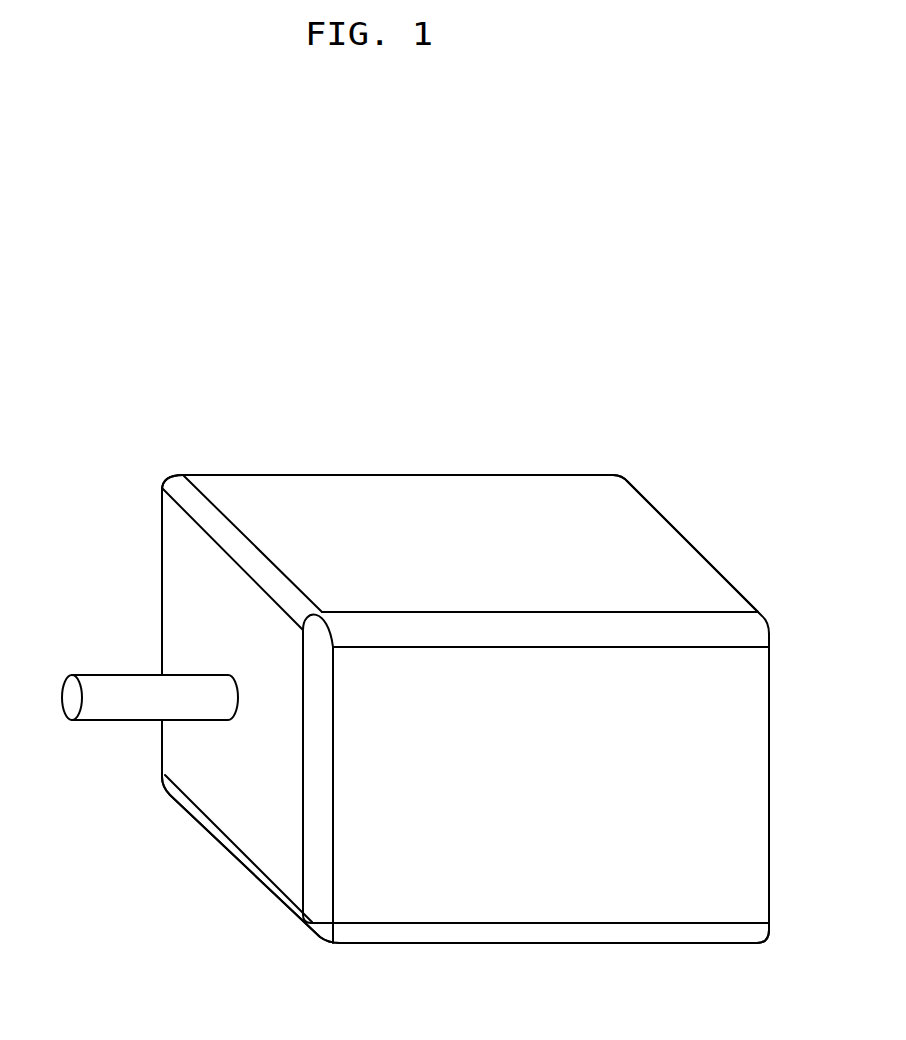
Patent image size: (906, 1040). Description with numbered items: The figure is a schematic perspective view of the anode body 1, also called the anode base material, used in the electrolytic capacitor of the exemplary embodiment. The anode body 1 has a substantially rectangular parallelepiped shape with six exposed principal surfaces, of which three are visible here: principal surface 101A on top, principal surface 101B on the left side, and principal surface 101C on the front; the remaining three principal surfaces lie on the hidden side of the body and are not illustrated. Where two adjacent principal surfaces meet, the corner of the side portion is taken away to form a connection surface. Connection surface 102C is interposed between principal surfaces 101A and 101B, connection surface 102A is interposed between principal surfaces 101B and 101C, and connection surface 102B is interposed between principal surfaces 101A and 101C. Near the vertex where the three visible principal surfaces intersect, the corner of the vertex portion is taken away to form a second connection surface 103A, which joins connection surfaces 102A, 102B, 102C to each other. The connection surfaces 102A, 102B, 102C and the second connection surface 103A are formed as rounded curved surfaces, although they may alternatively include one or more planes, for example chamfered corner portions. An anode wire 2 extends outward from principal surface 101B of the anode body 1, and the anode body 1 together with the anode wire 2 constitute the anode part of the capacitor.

The anode body 1 is at (630, 537).
The anode wire 2 is at (107, 700).
The principal surface 101A is at (403, 528).
The principal surface 101B is at (203, 615).
The principal surface 101C is at (572, 836).
The connection surface 102A is at (317, 800).
The connection surface 102B is at (517, 630).
The connection surface 102C is at (215, 532).
The second connection surface 103A is at (318, 627).